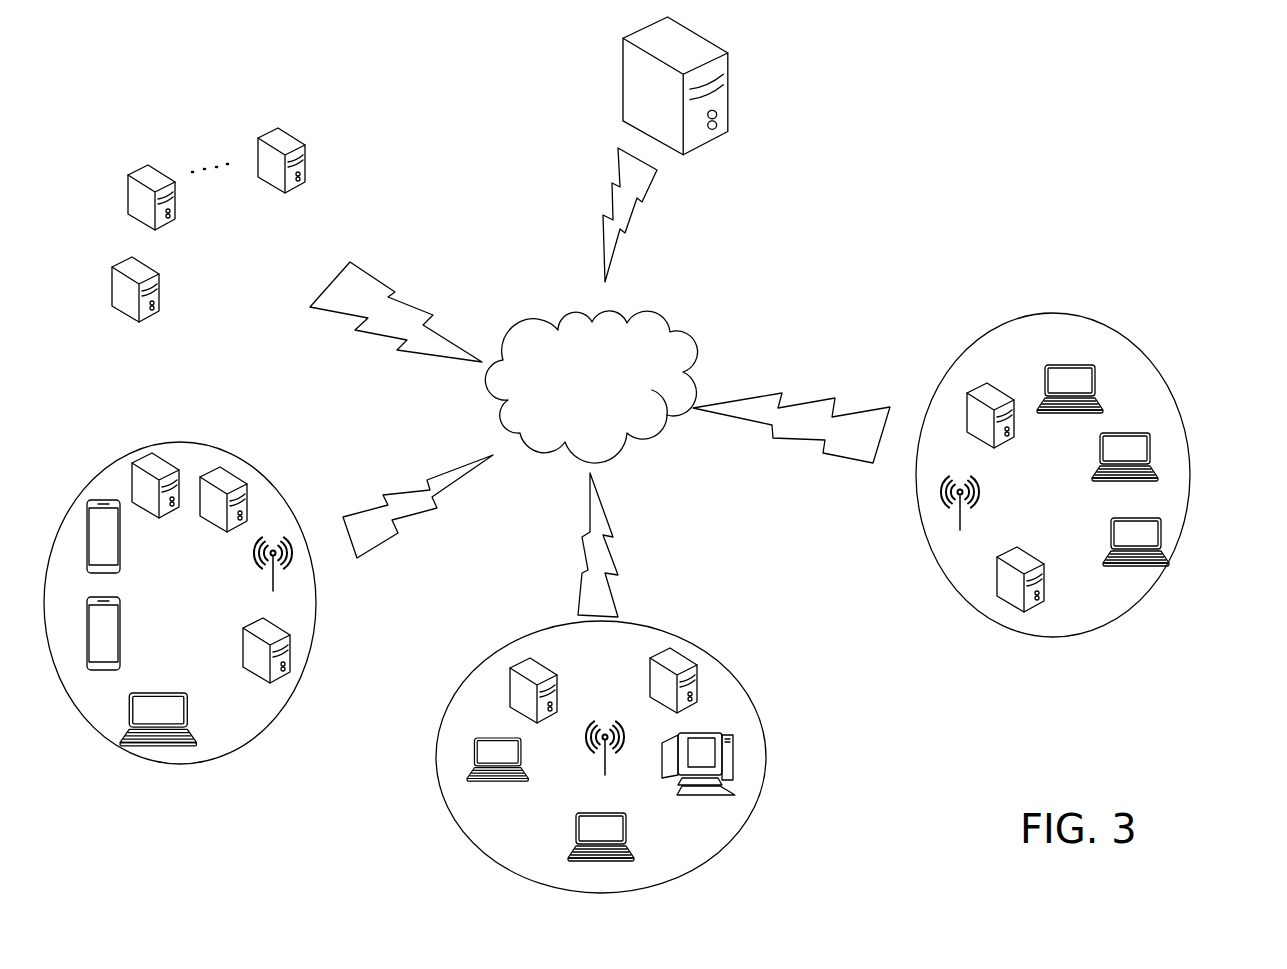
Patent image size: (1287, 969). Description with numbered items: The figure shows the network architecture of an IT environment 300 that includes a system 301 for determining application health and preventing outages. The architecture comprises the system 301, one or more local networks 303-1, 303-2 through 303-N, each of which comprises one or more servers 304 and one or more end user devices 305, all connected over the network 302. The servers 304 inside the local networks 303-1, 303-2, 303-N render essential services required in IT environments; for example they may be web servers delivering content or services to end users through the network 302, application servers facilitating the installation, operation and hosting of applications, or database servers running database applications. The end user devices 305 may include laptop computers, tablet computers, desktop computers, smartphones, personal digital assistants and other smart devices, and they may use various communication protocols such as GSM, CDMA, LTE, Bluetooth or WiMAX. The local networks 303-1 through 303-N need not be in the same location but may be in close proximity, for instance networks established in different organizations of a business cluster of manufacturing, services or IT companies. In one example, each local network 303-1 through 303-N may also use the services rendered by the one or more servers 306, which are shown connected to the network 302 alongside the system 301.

The IT environment 300 is at (252, 94).
The system 301 is at (730, 90).
The network 302 is at (697, 378).
The local network 303-1 is at (257, 737).
The local network 303-2 is at (735, 833).
The local network 303-N is at (1122, 617).
The server 304 is at (233, 477).
The end user device 305 is at (105, 498).
The server 306 is at (305, 158).